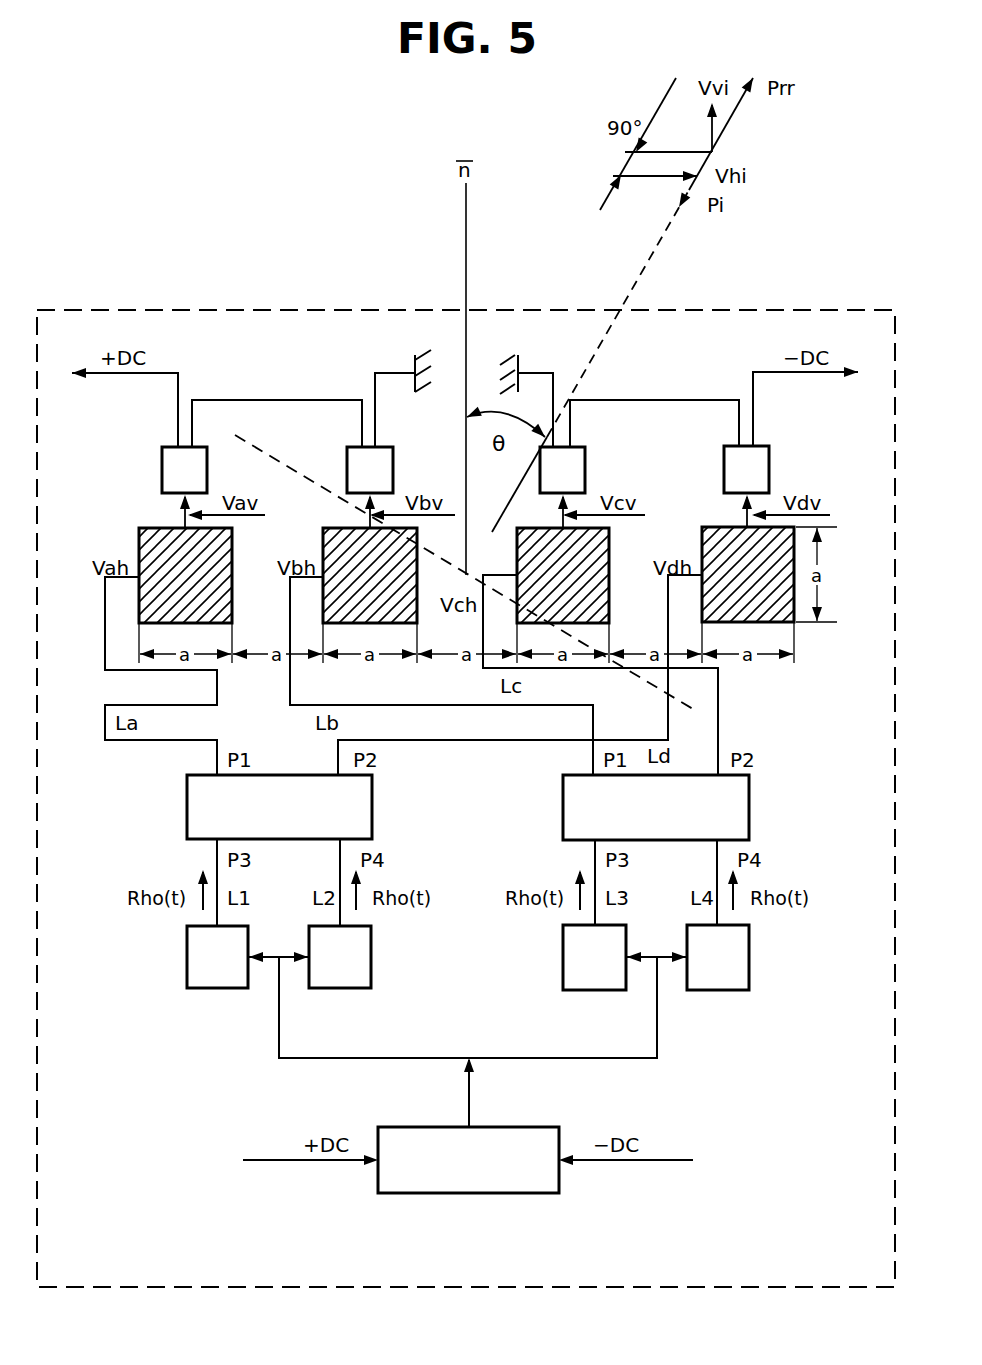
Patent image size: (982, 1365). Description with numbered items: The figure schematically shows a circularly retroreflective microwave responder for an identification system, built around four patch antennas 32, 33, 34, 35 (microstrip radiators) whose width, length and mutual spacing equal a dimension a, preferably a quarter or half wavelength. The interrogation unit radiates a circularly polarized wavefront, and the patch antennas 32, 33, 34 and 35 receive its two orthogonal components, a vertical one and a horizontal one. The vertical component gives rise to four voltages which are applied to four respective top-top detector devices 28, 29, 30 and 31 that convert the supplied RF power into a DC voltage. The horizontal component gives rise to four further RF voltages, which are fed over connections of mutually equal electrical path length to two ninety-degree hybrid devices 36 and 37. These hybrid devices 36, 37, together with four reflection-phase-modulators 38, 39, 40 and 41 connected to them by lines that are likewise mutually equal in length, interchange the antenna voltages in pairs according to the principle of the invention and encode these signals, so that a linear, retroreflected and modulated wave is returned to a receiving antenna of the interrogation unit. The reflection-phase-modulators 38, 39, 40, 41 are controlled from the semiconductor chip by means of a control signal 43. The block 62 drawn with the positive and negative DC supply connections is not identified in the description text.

The top-top detector device 28 is at (165, 463).
The top-top detector device 29 is at (352, 462).
The top-top detector device 30 is at (583, 465).
The top-top detector device 31 is at (768, 463).
The patch antenna 32 is at (147, 528).
The patch antenna 33 is at (333, 597).
The patch antenna 34 is at (607, 545).
The patch antenna 35 is at (712, 531).
The 90° hybrid device 36 is at (196, 810).
The 90° hybrid device 37 is at (740, 810).
The reflection-phase-modulator 38 is at (745, 957).
The reflection-phase-modulator 39 is at (570, 957).
The reflection-phase-modulator 40 is at (365, 957).
The reflection-phase-modulator 41 is at (194, 957).
The control signal 43 is at (610, 1058).
The power supply / controller 62 is at (467, 1182).